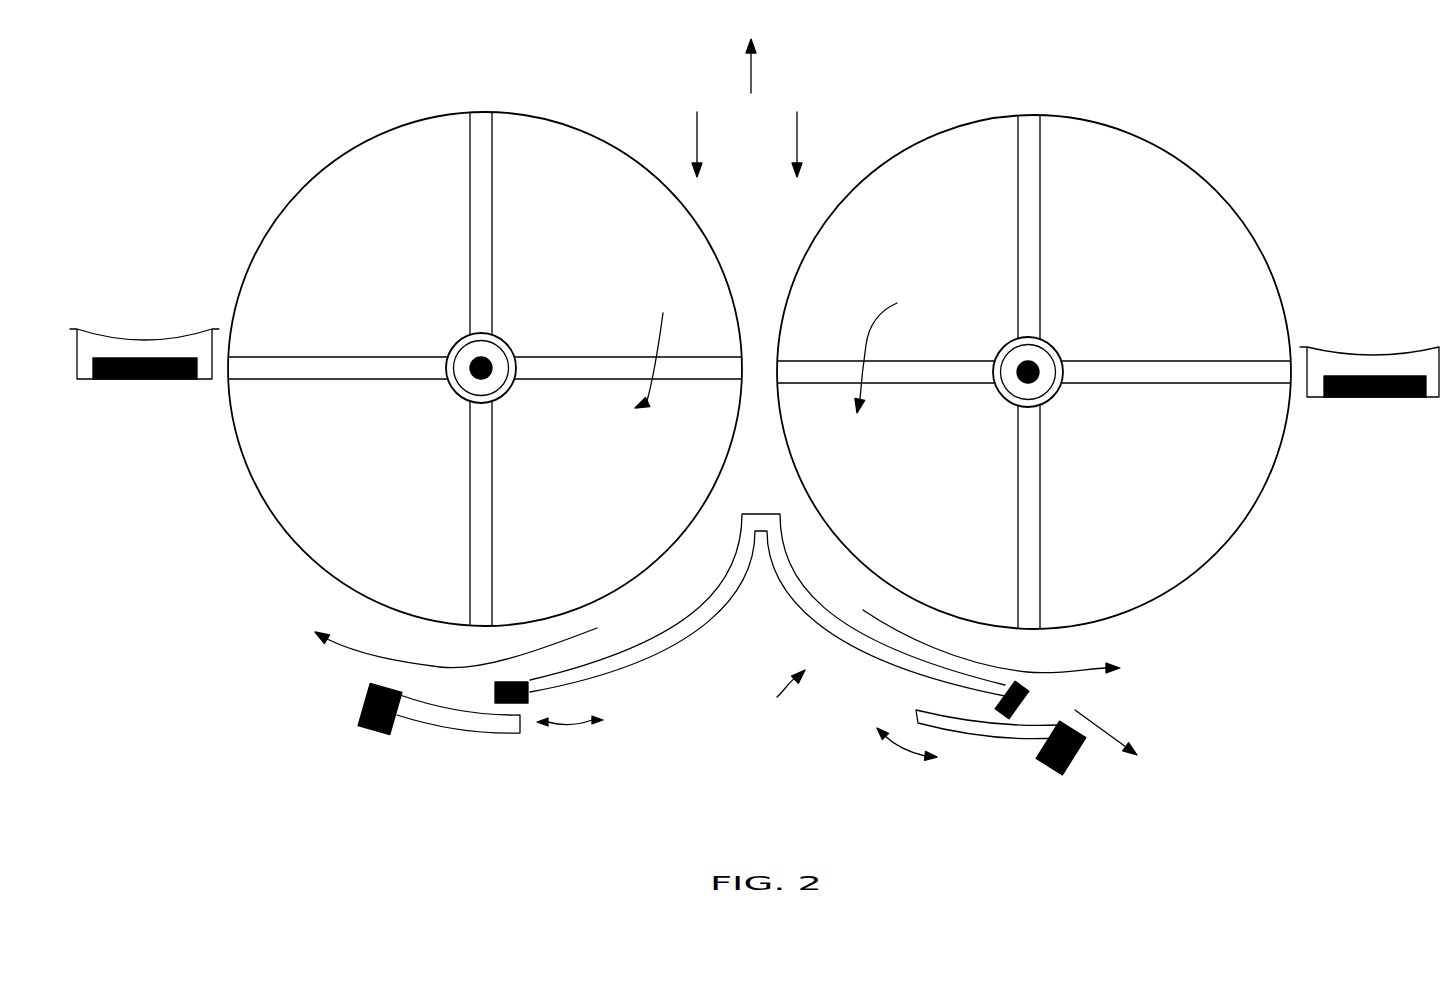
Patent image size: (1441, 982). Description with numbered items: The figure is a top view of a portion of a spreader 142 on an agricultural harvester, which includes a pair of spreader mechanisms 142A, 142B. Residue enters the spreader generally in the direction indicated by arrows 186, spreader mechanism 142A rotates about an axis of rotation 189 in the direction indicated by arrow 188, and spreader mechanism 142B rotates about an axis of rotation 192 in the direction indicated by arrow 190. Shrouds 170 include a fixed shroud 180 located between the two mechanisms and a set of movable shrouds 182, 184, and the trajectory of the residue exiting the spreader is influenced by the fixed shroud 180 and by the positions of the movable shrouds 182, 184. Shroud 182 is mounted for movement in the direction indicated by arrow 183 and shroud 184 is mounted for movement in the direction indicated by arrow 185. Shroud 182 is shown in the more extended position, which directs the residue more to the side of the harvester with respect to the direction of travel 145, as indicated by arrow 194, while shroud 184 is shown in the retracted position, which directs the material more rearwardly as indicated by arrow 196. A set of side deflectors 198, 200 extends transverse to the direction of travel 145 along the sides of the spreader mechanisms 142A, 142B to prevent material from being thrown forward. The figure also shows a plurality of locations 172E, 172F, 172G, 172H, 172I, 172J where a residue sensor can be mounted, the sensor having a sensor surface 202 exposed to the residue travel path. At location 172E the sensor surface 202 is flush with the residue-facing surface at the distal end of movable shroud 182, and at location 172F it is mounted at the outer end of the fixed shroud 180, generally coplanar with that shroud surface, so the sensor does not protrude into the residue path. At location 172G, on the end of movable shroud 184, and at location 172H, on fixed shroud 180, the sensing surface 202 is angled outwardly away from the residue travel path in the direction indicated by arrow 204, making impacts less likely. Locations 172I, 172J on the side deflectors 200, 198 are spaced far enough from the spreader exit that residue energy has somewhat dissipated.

The spreader 142 is at (1210, 90).
The spreader mechanism 142A is at (506, 174).
The spreader mechanism 142B is at (1055, 200).
The direction of travel 145 is at (752, 83).
The arrows 186 is at (797, 147).
The arrow 188 is at (663, 337).
The axis of rotation 189 is at (492, 366).
The arrow 190 is at (868, 328).
The axis of rotation 192 is at (1040, 370).
The arrow 194 is at (447, 665).
The arrow 196 is at (1068, 668).
The side deflector 198 is at (1382, 352).
The side deflector 200 is at (125, 340).
The sensor location 172I is at (152, 380).
The sensor location 172J is at (1397, 397).
The fixed shroud 180 is at (697, 633).
The shrouds 170 is at (778, 699).
The sensor location 172E is at (372, 733).
The sensor location 172F is at (528, 693).
The sensor location 172G is at (1060, 775).
The sensor location 172H is at (1032, 697).
The movable shroud 182 is at (492, 730).
The arrow 183 is at (585, 730).
The movable shroud 184 is at (987, 735).
The arrow 185 is at (908, 753).
The sensor surface 202 is at (378, 683).
The arrow 204 is at (1107, 730).